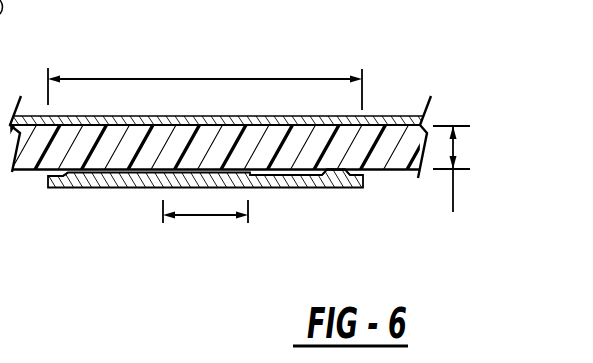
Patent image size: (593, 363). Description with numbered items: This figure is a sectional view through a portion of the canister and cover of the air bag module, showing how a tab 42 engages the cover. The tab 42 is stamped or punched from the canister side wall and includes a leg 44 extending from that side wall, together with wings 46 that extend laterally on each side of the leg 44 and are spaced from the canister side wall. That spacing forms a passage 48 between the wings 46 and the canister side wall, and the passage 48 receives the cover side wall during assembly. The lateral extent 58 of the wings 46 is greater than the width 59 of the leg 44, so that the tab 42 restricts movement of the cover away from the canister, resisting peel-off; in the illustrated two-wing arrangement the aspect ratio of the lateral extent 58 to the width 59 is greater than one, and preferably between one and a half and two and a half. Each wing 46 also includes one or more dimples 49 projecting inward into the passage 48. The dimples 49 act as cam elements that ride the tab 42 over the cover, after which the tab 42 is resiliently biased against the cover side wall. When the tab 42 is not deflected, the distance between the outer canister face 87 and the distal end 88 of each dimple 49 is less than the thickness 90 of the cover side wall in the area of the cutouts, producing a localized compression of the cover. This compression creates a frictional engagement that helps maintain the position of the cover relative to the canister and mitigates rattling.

The tab 42 is at (275, 170).
The leg 44 is at (276, 174).
The wings 46 is at (117, 189).
The passage 48 is at (7, 274).
The dimples 49 is at (333, 175).
The lateral extent 58 is at (232, 79).
The width 59 is at (207, 216).
The outer canister face 87 is at (343, 130).
The distal end 88 is at (80, 170).
The thickness 90 is at (451, 185).